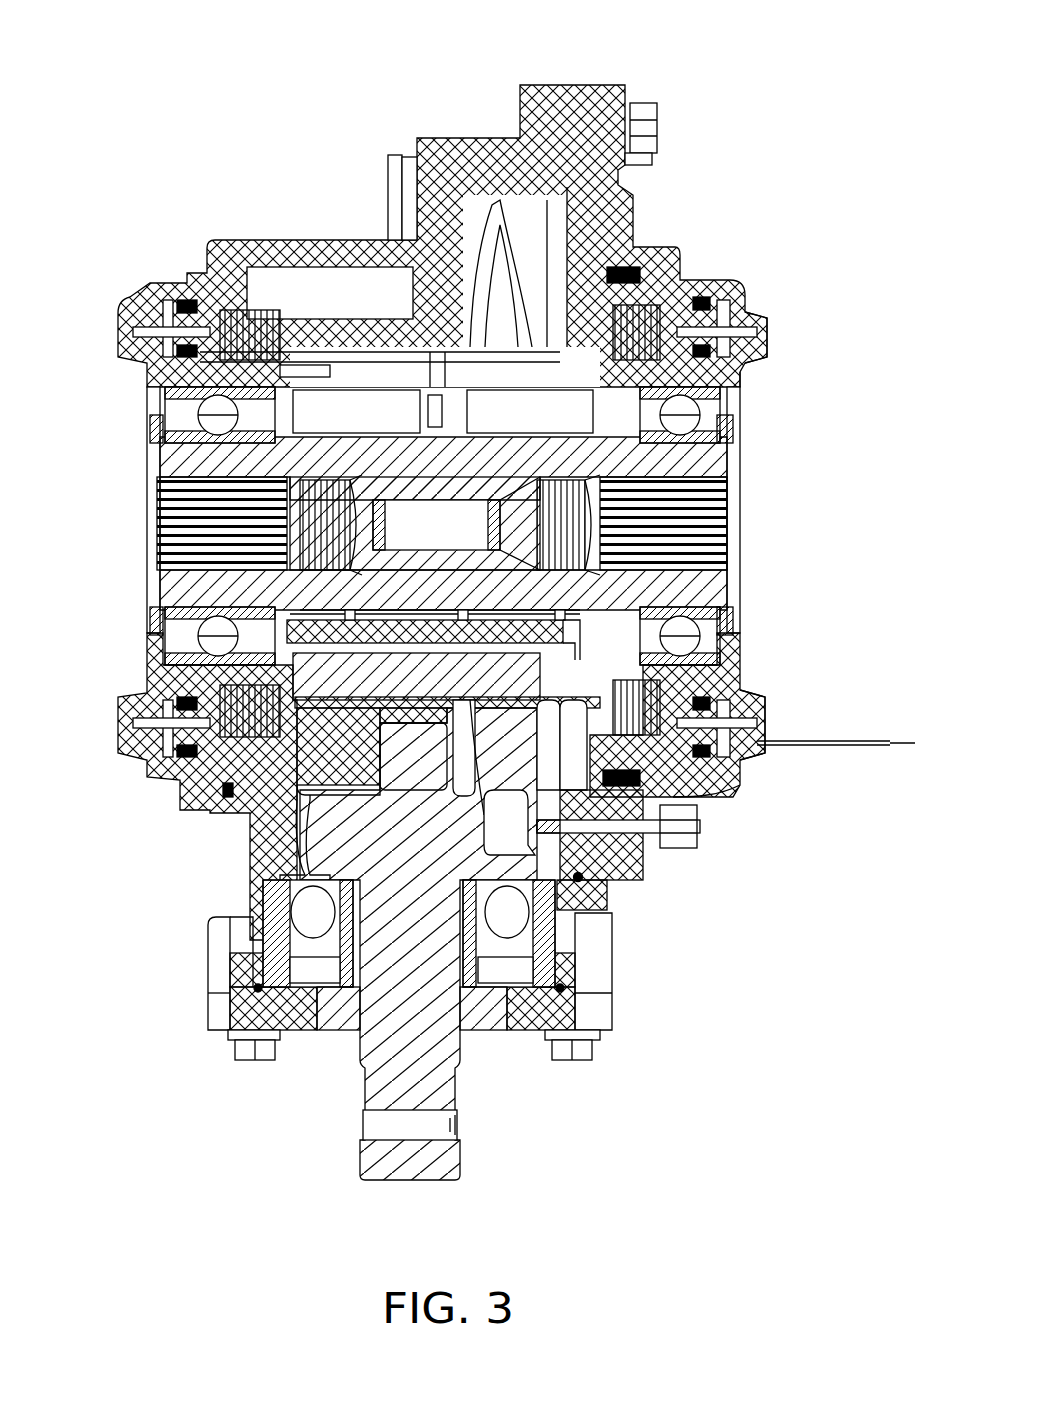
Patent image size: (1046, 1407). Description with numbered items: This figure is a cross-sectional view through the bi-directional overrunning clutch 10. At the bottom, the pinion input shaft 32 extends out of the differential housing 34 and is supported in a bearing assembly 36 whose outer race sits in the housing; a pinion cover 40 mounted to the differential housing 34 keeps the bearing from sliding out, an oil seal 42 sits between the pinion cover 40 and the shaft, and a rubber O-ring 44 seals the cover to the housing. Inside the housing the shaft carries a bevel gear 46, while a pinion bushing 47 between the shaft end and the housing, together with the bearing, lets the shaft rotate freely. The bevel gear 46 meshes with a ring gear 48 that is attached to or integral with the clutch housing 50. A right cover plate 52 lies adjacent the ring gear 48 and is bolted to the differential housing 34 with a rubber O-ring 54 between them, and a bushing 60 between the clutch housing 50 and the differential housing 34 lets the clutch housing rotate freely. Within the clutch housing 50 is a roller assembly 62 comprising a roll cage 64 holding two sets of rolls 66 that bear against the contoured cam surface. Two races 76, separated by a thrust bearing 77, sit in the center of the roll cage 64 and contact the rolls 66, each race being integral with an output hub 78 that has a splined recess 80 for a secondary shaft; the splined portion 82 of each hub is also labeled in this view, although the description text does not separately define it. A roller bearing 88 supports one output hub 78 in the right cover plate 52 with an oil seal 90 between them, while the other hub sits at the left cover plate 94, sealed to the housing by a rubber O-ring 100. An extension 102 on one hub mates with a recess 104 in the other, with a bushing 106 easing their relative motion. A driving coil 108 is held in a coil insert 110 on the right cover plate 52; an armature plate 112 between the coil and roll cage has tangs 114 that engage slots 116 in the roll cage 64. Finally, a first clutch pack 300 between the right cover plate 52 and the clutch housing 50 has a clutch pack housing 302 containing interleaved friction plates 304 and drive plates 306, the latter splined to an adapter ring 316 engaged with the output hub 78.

The bi-directional overrunning clutch 10 is at (677, 1122).
The pinion input shaft 32 is at (427, 1182).
The differential housing 34 is at (185, 1000).
The bearing assembly 36 is at (575, 940).
The pinion cover 40 is at (513, 1037).
The oil seal 42 is at (337, 1020).
The rubber O-ring 44 is at (593, 973).
The bevel gear 46 is at (600, 870).
The pinion bushing 47 is at (247, 807).
The ring gear 48 is at (647, 808).
The clutch housing 50 is at (235, 812).
The right cover plate 52 is at (745, 355).
The rubber O-ring 54 is at (585, 173).
The bushing 60 is at (360, 345).
The roller assembly 62 is at (490, 407).
The roll cage 64 is at (700, 588).
The rolls 66 is at (695, 455).
The races 76 is at (165, 452).
The thrust bearing 77 is at (433, 567).
The output hub 78 is at (173, 593).
The recess 80 is at (140, 503).
The winding 82 is at (173, 533).
The roller bearing 88 is at (153, 677).
The oil seal 90 is at (712, 432).
The left cover plate 94 is at (120, 313).
The rubber O-ring 100 is at (207, 257).
The extension 102 is at (410, 520).
The recess 104 is at (520, 523).
The bushing 106 is at (643, 573).
The driving coil 108 is at (634, 302).
The coil insert 110 is at (690, 300).
The armature plate 112 is at (690, 792).
The tangs 114 is at (575, 672).
The slots 116 is at (585, 655).
The first clutch pack 300 is at (665, 257).
The clutch pack housing 302 is at (712, 300).
The friction plate 304 is at (725, 330).
The drive plate 306 is at (747, 363).
The adapter ring 316 is at (740, 690).